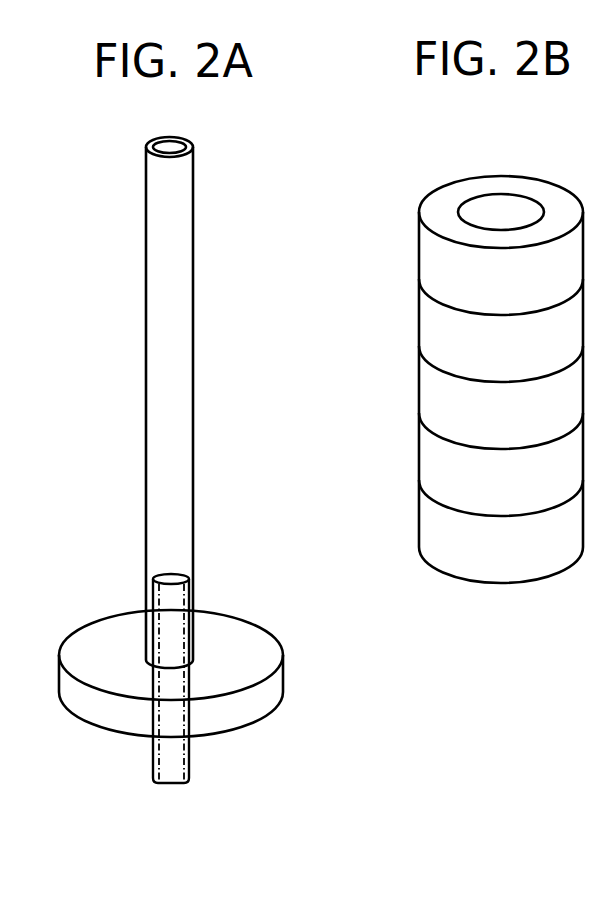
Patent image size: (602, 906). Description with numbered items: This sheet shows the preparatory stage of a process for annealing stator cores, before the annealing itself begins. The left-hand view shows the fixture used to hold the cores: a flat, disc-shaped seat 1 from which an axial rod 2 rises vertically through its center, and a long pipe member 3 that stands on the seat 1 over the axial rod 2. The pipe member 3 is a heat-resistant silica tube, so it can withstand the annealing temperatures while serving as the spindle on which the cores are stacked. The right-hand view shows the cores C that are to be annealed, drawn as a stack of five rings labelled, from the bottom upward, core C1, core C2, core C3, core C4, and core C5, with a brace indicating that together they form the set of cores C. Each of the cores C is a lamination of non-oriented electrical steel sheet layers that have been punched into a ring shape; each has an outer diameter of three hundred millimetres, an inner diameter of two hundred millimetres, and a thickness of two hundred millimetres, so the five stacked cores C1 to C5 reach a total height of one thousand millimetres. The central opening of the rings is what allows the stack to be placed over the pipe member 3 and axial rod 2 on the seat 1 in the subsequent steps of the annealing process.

In FIG. 2A, the seat 1 is at (265, 657).
In FIG. 2A, the axial rod 2 is at (180, 760).
In FIG. 2A, the pipe member 3 is at (183, 472).
In FIG. 2B, the cores C is at (447, 379).
In FIG. 2B, the core C1 is at (472, 531).
In FIG. 2B, the core C2 is at (442, 480).
In FIG. 2B, the core C3 is at (442, 409).
In FIG. 2B, the core C4 is at (442, 340).
In FIG. 2B, the core C5 is at (442, 269).